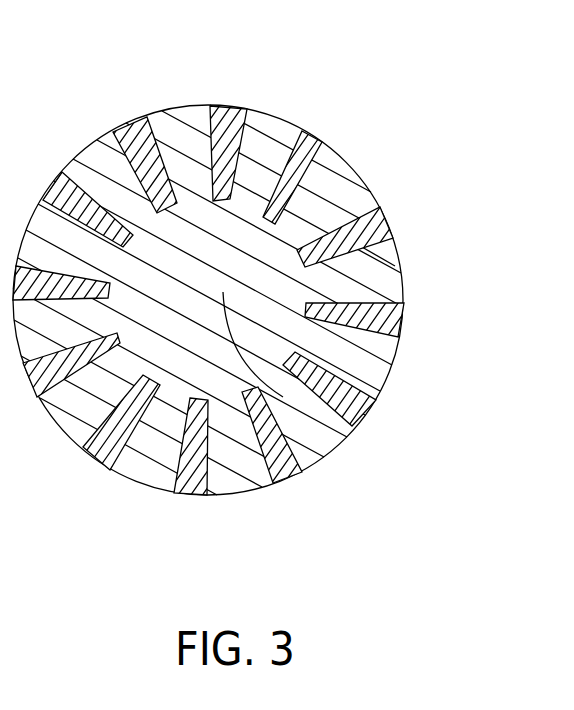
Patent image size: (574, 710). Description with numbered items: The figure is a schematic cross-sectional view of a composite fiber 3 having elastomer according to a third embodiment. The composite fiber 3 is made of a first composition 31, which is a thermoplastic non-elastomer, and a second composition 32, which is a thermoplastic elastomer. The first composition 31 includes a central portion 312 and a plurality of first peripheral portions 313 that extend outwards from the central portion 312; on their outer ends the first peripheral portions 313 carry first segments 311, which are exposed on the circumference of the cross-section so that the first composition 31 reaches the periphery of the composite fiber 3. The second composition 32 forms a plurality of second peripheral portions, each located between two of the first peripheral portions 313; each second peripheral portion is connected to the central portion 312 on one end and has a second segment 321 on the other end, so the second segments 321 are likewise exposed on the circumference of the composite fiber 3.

The composite fiber 3 is at (269, 271).
The first composition 31 is at (271, 297).
The first segments 311 is at (363, 178).
The central portion 312 is at (283, 397).
The first peripheral portions 313 is at (367, 277).
The second composition 32 is at (208, 257).
The second segments 321 is at (237, 107).